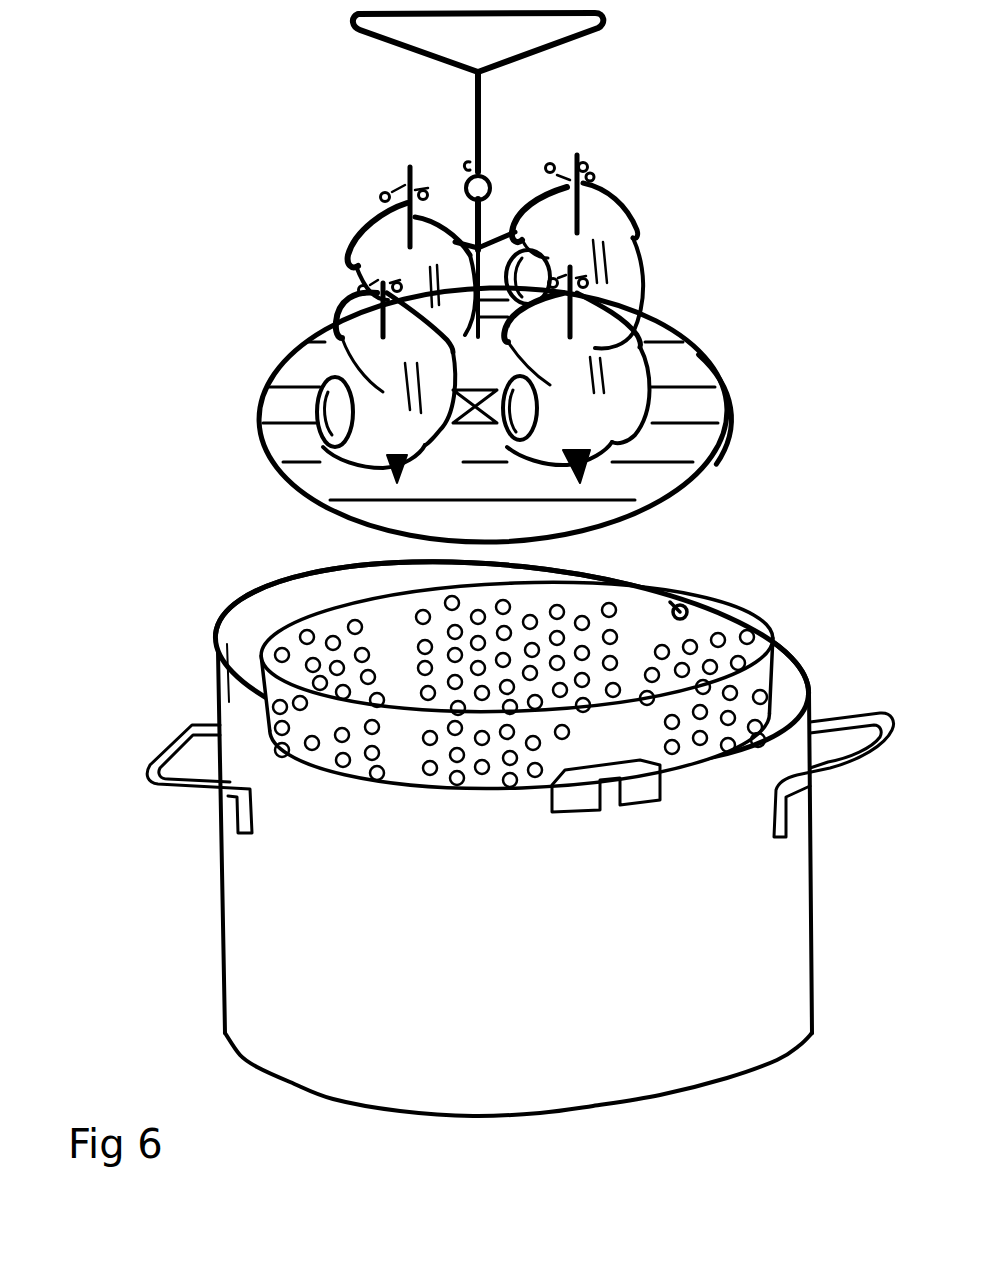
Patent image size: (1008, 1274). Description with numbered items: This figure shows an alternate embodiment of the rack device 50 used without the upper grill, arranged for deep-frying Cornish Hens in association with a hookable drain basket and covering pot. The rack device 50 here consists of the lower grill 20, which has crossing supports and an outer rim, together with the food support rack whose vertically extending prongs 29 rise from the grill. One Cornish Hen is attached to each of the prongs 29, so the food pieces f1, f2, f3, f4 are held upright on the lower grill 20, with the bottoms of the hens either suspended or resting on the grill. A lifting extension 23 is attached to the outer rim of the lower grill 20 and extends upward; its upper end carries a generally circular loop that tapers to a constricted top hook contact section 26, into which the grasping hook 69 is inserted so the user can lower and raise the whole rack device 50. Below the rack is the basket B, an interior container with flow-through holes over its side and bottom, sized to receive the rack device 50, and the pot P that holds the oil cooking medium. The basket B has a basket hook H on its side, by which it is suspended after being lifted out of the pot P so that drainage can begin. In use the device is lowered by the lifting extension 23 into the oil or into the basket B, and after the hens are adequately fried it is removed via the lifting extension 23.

The grasping hook 69 is at (578, 40).
The hook contact section 26 is at (490, 190).
The lifting extension 23 is at (483, 222).
The prongs 29 is at (620, 303).
The lower grill 20 is at (725, 396).
The rack device 50 is at (723, 437).
The food piece f1 is at (373, 250).
The food piece f2 is at (610, 242).
The food piece f3 is at (600, 388).
The food piece f4 is at (300, 463).
The basket B is at (772, 656).
The basket hook H is at (652, 788).
The pot P is at (783, 911).